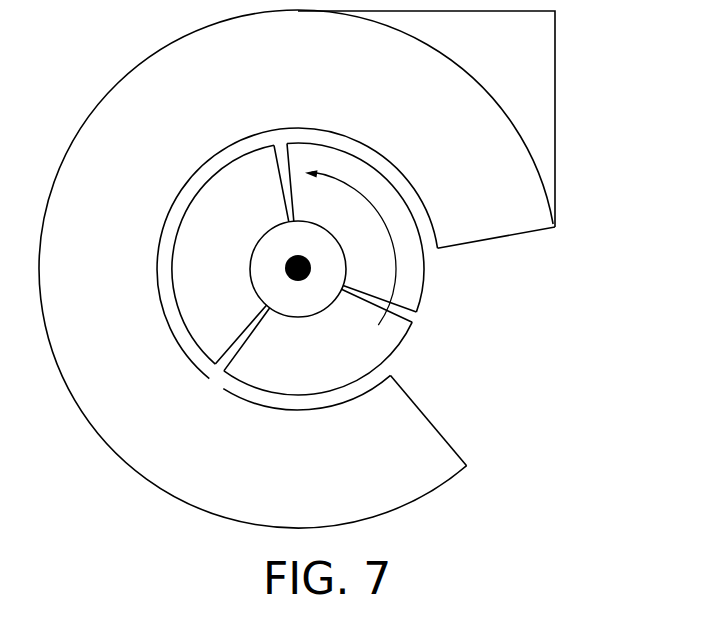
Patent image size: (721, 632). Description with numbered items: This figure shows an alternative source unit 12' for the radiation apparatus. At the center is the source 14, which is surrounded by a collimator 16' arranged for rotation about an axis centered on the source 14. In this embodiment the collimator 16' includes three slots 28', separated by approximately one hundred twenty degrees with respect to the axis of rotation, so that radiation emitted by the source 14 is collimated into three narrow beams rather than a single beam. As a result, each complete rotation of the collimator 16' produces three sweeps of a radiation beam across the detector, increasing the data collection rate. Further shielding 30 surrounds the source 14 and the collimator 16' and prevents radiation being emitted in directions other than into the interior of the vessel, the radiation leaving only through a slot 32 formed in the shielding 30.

The source unit 12' is at (329, 269).
The source 14 is at (286, 262).
The collimator 16' is at (269, 269).
The slots 28' is at (328, 252).
The shielding 30 is at (97, 412).
The slot 32 is at (516, 293).